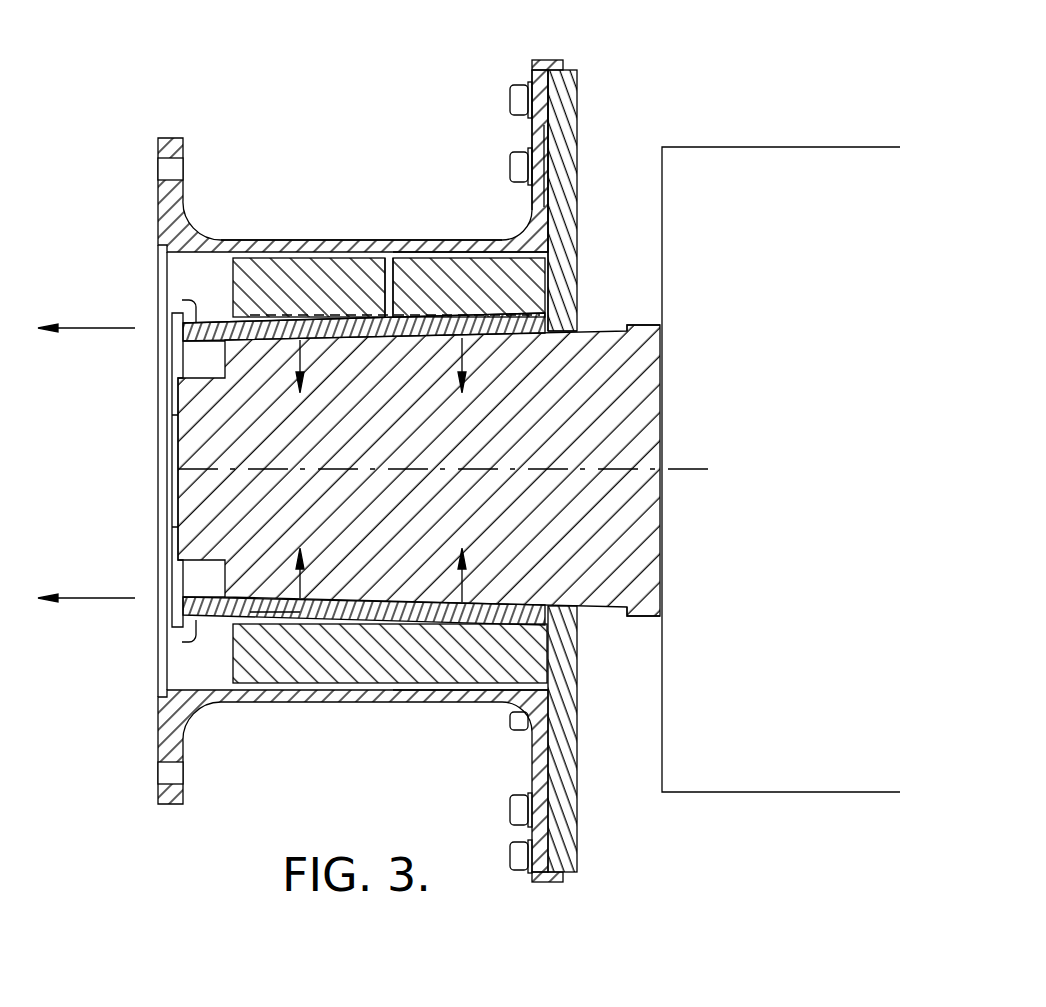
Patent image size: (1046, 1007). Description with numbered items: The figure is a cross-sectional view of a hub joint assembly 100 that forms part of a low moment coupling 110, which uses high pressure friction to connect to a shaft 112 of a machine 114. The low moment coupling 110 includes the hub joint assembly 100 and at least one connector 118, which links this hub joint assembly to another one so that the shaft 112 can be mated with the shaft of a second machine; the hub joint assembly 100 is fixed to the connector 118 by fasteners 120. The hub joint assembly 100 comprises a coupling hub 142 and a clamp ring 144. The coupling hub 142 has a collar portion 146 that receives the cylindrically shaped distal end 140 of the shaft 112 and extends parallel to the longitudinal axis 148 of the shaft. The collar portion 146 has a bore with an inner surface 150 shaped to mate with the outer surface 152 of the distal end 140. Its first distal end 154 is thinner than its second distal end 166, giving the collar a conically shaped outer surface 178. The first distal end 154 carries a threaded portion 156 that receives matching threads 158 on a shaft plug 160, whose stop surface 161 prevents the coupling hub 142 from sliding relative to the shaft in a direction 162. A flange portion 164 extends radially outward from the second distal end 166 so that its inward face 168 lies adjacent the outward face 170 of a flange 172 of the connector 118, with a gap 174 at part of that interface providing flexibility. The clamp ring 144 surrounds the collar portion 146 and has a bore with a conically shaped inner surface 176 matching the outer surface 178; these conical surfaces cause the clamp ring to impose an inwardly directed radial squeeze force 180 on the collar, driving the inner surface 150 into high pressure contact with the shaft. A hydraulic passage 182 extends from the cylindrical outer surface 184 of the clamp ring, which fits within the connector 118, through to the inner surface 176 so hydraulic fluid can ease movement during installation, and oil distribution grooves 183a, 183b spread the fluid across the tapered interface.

The hub joint assembly 100 is at (588, 272).
The low moment coupling 110 is at (180, 135).
The shaft 112 is at (650, 413).
The machine 114 is at (781, 469).
The connector 118 is at (357, 248).
The fasteners 120 is at (510, 160).
The distal end 140 is at (275, 602).
The coupling hub 142 is at (270, 315).
The clamp ring 144 is at (292, 267).
The collar portion 146 is at (300, 322).
The longitudinal axis 148 is at (716, 473).
The inner surface 150 is at (517, 605).
The outer surface 152 is at (470, 688).
The first distal end 154 is at (210, 323).
The threaded portion 156 is at (218, 592).
The matching threads 158 is at (206, 620).
The shaft plug 160 is at (190, 363).
The stop surface 161 is at (182, 300).
The direction 162 is at (100, 328).
The flange portion 164 is at (570, 122).
The second distal end 166 is at (565, 326).
The inward face 168 is at (545, 173).
The outward face 170 is at (584, 92).
The flange 172 is at (532, 63).
The gap 174 is at (545, 196).
The inner surface 176 is at (520, 336).
The outer surface 178 is at (510, 305).
The radial squeeze force 180 is at (302, 353).
The hydraulic passage 182 is at (390, 278).
The oil distribution groove 183a is at (505, 338).
The oil distribution groove 183b is at (357, 322).
The outer surface 184 is at (443, 257).